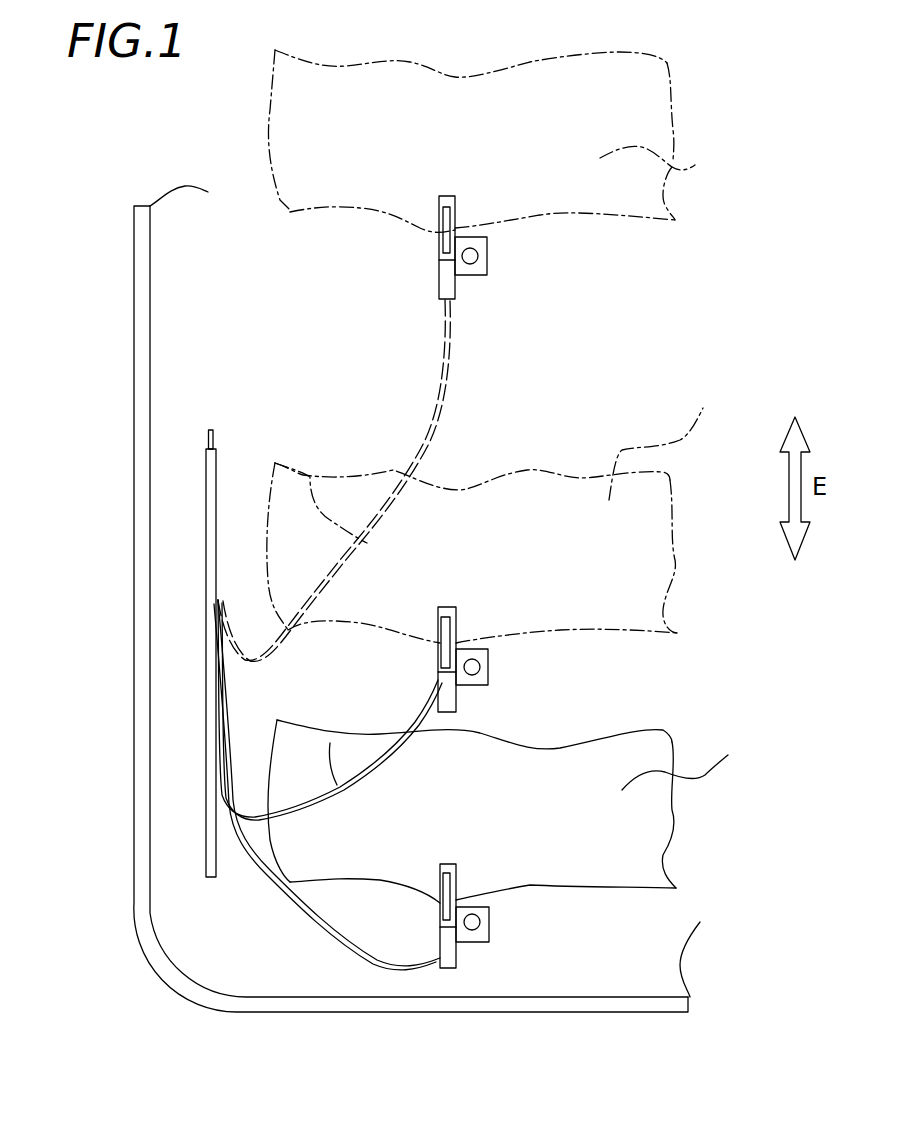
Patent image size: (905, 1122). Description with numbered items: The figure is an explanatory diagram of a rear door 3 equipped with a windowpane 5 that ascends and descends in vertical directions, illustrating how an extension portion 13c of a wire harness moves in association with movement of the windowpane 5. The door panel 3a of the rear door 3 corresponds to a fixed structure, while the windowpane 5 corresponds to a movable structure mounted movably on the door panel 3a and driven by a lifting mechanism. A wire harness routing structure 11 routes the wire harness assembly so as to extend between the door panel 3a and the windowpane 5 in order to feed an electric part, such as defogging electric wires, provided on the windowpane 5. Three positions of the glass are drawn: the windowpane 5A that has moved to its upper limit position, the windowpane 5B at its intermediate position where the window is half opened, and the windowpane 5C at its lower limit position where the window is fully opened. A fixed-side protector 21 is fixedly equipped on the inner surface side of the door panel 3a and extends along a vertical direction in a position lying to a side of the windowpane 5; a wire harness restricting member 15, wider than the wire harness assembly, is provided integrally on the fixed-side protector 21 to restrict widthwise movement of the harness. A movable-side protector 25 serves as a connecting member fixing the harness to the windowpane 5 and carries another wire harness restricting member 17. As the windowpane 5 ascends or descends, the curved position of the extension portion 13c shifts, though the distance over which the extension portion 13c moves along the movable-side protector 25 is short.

The rear door 3 is at (138, 512).
The door panel 3a is at (173, 663).
The windowpane 5 is at (256, 228).
The windowpane at upper limit position 5A is at (695, 165).
The windowpane at intermediate position 5B is at (496, 513).
The windowpane at lower limit position 5C is at (519, 811).
The wire harness routing structure 11 is at (222, 936).
The extension portion 13c is at (310, 487).
The wire harness restricting member 15 is at (212, 850).
The wire harness restricting member 17 is at (447, 968).
The fixed-side protector 21 is at (207, 588).
The movable-side protector 25 is at (478, 928).